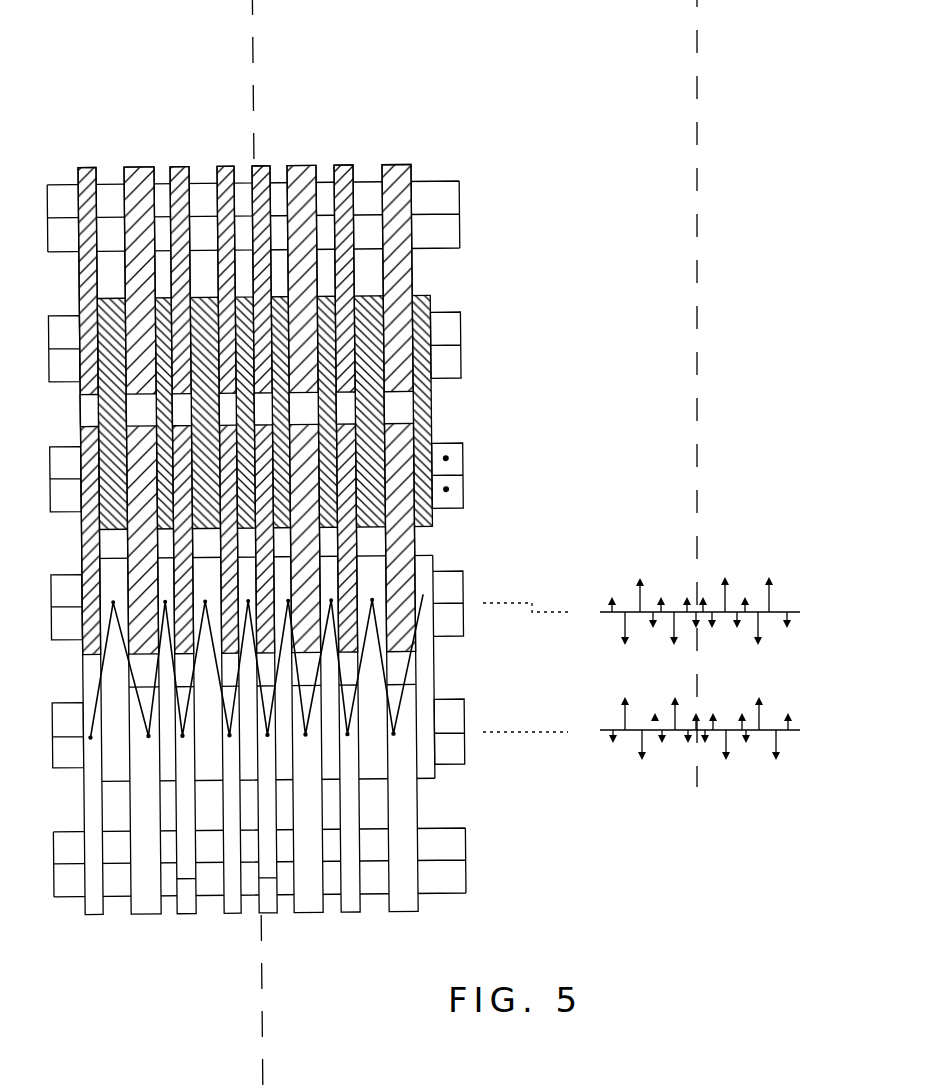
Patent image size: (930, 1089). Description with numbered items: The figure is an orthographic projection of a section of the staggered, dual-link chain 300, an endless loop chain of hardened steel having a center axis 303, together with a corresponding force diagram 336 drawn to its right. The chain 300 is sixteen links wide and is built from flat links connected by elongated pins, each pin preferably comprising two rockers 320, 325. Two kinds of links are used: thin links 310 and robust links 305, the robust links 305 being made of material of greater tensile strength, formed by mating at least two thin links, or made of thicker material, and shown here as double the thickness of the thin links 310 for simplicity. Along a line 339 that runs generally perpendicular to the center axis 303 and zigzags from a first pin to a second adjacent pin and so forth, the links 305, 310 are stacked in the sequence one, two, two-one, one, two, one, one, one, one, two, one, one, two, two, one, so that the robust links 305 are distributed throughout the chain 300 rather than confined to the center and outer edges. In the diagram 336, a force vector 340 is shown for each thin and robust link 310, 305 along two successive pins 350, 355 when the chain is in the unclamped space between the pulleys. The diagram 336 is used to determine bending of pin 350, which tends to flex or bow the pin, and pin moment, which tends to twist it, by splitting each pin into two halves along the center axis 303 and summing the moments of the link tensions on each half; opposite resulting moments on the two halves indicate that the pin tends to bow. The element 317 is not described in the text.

The chain 300 is at (270, 63).
The center axis 303 is at (253, 140).
The robust link 305 is at (130, 165).
The thin link 310 is at (347, 914).
The contact element with vias 317 is at (447, 461).
The rocker 320 is at (463, 312).
The rocker 325 is at (462, 358).
The diagram 336 is at (711, 476).
The line 339 is at (100, 677).
The force vector 340 is at (737, 582).
The pin 350 is at (465, 585).
The pin 355 is at (465, 705).